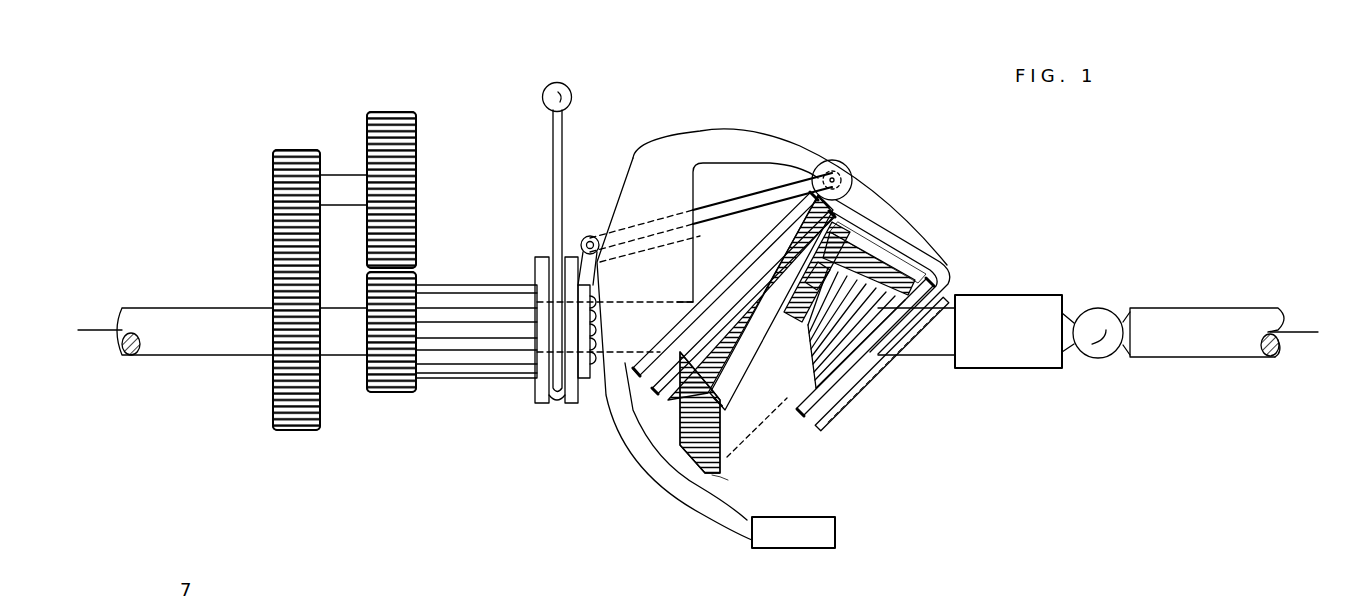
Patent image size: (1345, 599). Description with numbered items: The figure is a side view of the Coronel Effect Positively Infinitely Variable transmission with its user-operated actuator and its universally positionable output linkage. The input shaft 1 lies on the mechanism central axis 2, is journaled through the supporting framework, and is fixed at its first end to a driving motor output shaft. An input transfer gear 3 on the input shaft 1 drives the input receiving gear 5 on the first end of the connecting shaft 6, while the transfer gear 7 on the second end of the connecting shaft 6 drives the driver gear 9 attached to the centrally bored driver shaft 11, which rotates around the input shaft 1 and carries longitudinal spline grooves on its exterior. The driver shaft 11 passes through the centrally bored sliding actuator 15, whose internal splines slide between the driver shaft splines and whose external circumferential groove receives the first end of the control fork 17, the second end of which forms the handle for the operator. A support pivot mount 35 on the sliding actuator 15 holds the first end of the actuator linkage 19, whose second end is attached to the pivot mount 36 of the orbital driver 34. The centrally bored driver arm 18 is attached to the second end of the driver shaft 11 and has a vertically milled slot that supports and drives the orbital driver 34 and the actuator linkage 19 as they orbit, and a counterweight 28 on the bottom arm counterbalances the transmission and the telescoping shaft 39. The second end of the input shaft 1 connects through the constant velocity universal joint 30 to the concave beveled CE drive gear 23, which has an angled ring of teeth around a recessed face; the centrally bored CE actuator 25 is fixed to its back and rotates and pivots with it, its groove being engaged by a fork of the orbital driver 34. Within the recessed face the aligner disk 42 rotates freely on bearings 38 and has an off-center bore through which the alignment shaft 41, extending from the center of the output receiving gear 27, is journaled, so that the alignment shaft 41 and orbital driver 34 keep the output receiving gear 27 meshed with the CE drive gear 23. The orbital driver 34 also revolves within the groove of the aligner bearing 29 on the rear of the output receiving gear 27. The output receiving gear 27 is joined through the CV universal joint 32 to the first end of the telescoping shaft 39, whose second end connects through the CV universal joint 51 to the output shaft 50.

The input shaft 1 is at (176, 355).
The mechanism central axis 2 is at (693, 332).
The input transfer gear 3 is at (273, 404).
The input receiving gear 5 is at (273, 193).
The connecting shaft 6 is at (341, 175).
The transfer gear 7 is at (388, 112).
The driver gear 9 is at (395, 392).
The driver shaft 11 is at (457, 378).
The sliding actuator 15 is at (535, 262).
The control fork 17 is at (553, 123).
The driver arm 18 is at (652, 150).
The actuator linkage 19 is at (738, 205).
The CE concave beveled drive gear 23 is at (712, 478).
The CE actuator 25 is at (733, 278).
The output receiving gear 27 is at (800, 408).
The counterweight 28 is at (835, 532).
The aligner bearing 29 is at (845, 420).
The constant velocity universal joint 30 is at (802, 350).
The CV universal joint 32 is at (880, 372).
The orbital driver 34 is at (920, 243).
The support pivot mount 35 is at (590, 236).
The pivot mount 36 is at (845, 182).
The bearings 38 is at (722, 450).
The telescoping shaft 39 is at (1003, 368).
The alignment shaft 41 is at (860, 232).
The aligner disk 42 is at (718, 395).
The output shaft 50 is at (1200, 357).
The CV universal joint 51 is at (1095, 360).